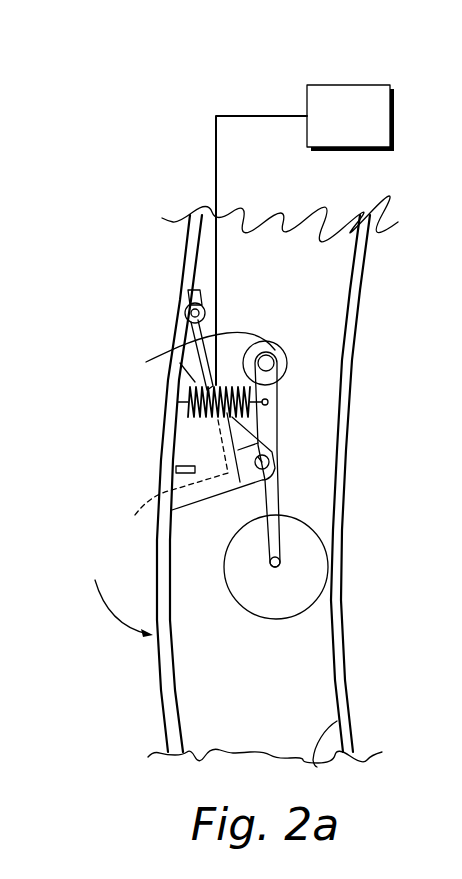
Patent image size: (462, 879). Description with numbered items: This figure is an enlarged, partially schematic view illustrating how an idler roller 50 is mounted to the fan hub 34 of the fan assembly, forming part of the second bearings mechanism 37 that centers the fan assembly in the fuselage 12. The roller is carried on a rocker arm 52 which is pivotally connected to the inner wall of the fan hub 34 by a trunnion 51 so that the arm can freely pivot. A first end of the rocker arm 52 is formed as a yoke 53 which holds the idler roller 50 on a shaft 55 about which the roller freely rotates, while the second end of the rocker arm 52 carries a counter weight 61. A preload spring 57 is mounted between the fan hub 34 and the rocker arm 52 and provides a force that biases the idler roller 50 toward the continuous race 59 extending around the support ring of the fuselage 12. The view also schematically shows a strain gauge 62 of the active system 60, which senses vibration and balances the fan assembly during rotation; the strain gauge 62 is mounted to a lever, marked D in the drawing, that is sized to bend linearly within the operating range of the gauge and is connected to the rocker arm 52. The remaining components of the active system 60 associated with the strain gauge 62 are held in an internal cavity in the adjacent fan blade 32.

The fuselage 12 is at (358, 290).
The fan blade 32 is at (453, 678).
The fan hub 34 is at (160, 685).
The second bearings mechanism 37 is at (461, 584).
The idler roller 50 is at (302, 585).
The trunnion 51 is at (270, 455).
The rocker arm 52 is at (277, 420).
The yoke 53 is at (270, 492).
The shaft 55 is at (275, 565).
The preload spring 57 is at (190, 405).
The continuous race 59 is at (313, 763).
The active system 60 is at (461, 472).
The counter weight 61 is at (197, 340).
The strain gauge 62 is at (350, 85).